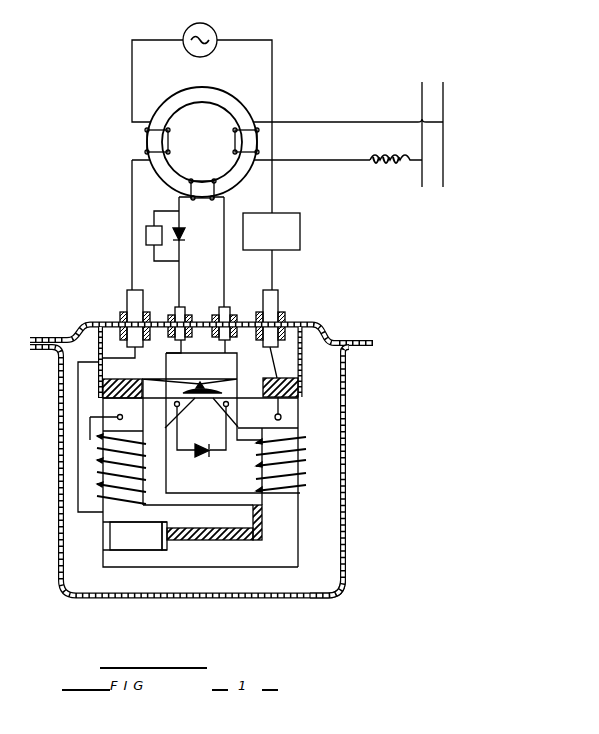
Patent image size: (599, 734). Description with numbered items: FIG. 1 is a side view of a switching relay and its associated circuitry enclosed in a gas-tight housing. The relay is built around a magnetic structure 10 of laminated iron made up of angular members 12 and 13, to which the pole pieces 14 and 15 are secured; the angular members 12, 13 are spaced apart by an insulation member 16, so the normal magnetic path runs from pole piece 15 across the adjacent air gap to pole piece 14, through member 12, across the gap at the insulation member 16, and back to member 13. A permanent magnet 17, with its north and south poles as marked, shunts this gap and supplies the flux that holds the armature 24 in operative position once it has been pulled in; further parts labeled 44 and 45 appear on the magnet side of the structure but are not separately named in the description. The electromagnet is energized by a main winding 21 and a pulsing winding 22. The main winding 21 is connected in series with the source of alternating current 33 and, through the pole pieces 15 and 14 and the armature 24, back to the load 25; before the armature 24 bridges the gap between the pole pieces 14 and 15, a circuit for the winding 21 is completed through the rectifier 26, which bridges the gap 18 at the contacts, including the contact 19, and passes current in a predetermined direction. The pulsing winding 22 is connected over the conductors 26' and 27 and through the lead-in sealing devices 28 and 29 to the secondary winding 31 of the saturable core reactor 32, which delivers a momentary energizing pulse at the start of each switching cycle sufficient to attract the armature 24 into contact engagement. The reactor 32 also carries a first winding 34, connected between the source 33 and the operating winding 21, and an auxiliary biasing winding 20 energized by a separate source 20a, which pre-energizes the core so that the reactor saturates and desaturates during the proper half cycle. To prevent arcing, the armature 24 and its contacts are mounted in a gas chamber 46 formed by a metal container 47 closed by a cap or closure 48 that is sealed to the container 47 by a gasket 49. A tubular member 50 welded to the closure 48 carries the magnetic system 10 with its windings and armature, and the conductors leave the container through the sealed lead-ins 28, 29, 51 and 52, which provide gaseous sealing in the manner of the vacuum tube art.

The magnetic structure 10 is at (303, 512).
The angular member 12 is at (297, 538).
The angular member 13 is at (123, 510).
The pole piece 14 is at (297, 409).
The pole piece 15 is at (120, 407).
The insulation member 16 is at (237, 541).
The permanent magnet 17 is at (150, 548).
The gap 18 is at (204, 400).
The contact 19 is at (123, 417).
The secondary winding 20 is at (270, 152).
The source 20a is at (432, 100).
The main winding 21 is at (97, 470).
The pulsing winding 22 is at (307, 470).
The armature 24 is at (210, 372).
The load 25 is at (300, 233).
The rectifier 26 is at (202, 463).
The lead wire 26' is at (160, 356).
The conductor 27 is at (238, 365).
The lead-in sealing device 28 is at (187, 312).
The lead-in sealing device 29 is at (231, 312).
The secondary winding 31 is at (205, 179).
The saturable core reactor 32 is at (247, 79).
The AC source 33 is at (213, 24).
The first winding 34 is at (146, 150).
The base plate 44 is at (122, 552).
The pole piece 45 is at (103, 525).
The gas chamber 46 is at (333, 433).
The container 47 is at (345, 580).
The closure 48 is at (323, 334).
The gasket 49 is at (32, 341).
The tubular member 50 is at (99, 352).
The sealed lead-in 51 is at (127, 295).
The sealed lead-in 52 is at (279, 293).